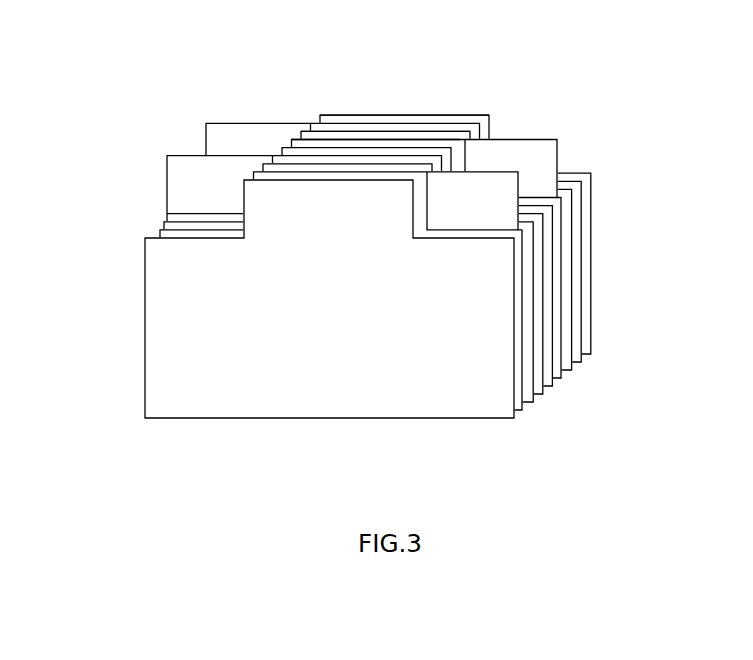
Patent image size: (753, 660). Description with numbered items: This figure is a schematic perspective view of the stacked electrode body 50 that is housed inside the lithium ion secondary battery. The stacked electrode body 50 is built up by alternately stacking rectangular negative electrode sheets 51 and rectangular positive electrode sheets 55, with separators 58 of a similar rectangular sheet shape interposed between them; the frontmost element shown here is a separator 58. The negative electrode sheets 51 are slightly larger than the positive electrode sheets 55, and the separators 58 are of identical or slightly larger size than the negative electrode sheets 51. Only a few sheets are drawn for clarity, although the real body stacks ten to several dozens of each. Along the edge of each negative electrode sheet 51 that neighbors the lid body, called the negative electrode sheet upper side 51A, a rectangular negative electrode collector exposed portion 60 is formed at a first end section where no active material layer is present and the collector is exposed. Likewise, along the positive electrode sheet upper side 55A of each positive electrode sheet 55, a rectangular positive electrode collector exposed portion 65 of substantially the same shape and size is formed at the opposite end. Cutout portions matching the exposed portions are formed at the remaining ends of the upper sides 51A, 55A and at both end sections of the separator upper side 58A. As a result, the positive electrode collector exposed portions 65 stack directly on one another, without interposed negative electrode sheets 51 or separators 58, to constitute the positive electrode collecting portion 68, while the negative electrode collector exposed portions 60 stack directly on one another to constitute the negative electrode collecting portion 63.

The stacked electrode body 50 is at (536, 75).
The negative electrode sheet 51 is at (545, 327).
The negative electrode sheet upper side 51A is at (401, 124).
The positive electrode sheet 55 is at (517, 382).
The positive electrode sheet upper side 55A is at (341, 137).
The separator 58 is at (525, 293).
The separator upper side 58A is at (470, 115).
The negative electrode collector exposed portion 60 is at (179, 168).
The negative electrode collecting portion 63 is at (218, 135).
The positive electrode collector exposed portion 65 is at (549, 167).
The positive electrode collecting portion 68 is at (517, 186).